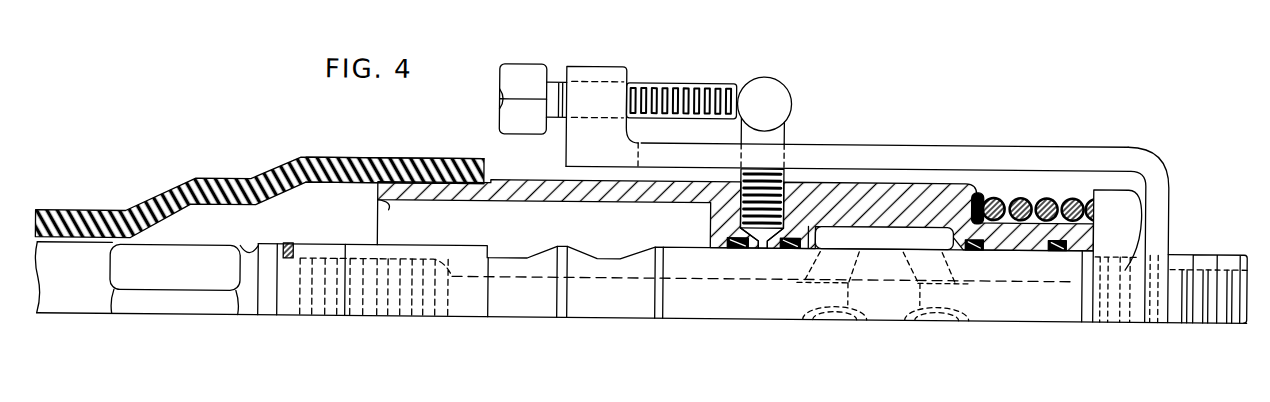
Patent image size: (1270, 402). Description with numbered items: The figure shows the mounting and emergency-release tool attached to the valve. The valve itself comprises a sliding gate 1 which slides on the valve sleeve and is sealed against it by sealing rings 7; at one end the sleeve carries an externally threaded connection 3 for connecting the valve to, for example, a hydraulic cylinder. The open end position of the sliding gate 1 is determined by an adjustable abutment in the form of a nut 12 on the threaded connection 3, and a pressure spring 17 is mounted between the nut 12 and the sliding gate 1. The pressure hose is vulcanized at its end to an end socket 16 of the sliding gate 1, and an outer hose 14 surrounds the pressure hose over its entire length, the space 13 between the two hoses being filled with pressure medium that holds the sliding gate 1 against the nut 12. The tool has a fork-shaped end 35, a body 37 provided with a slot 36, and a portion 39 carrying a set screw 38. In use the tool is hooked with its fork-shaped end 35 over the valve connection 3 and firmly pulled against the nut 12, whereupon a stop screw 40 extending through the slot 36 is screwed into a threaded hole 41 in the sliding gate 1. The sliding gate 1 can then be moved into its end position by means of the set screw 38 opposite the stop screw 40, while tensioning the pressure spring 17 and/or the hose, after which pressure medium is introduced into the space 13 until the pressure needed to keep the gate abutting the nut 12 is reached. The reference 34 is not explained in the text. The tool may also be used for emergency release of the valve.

The sliding gate 1 is at (962, 184).
The externally threaded connection 3 is at (1200, 250).
The sealing rings 7 is at (784, 250).
The adjustable abutment 12 is at (1123, 212).
The space 13 is at (328, 196).
The outer hose 14 is at (229, 187).
The end socket 16 is at (388, 213).
The pressure spring 17 is at (993, 196).
The housing 34 is at (922, 146).
The fork-shaped end 35 is at (1170, 168).
The slot 36 is at (671, 158).
The body 37 is at (875, 150).
The set screw 38 is at (524, 66).
The portion 39 is at (597, 67).
The stop screw 40 is at (790, 99).
The threaded hole 41 is at (788, 176).